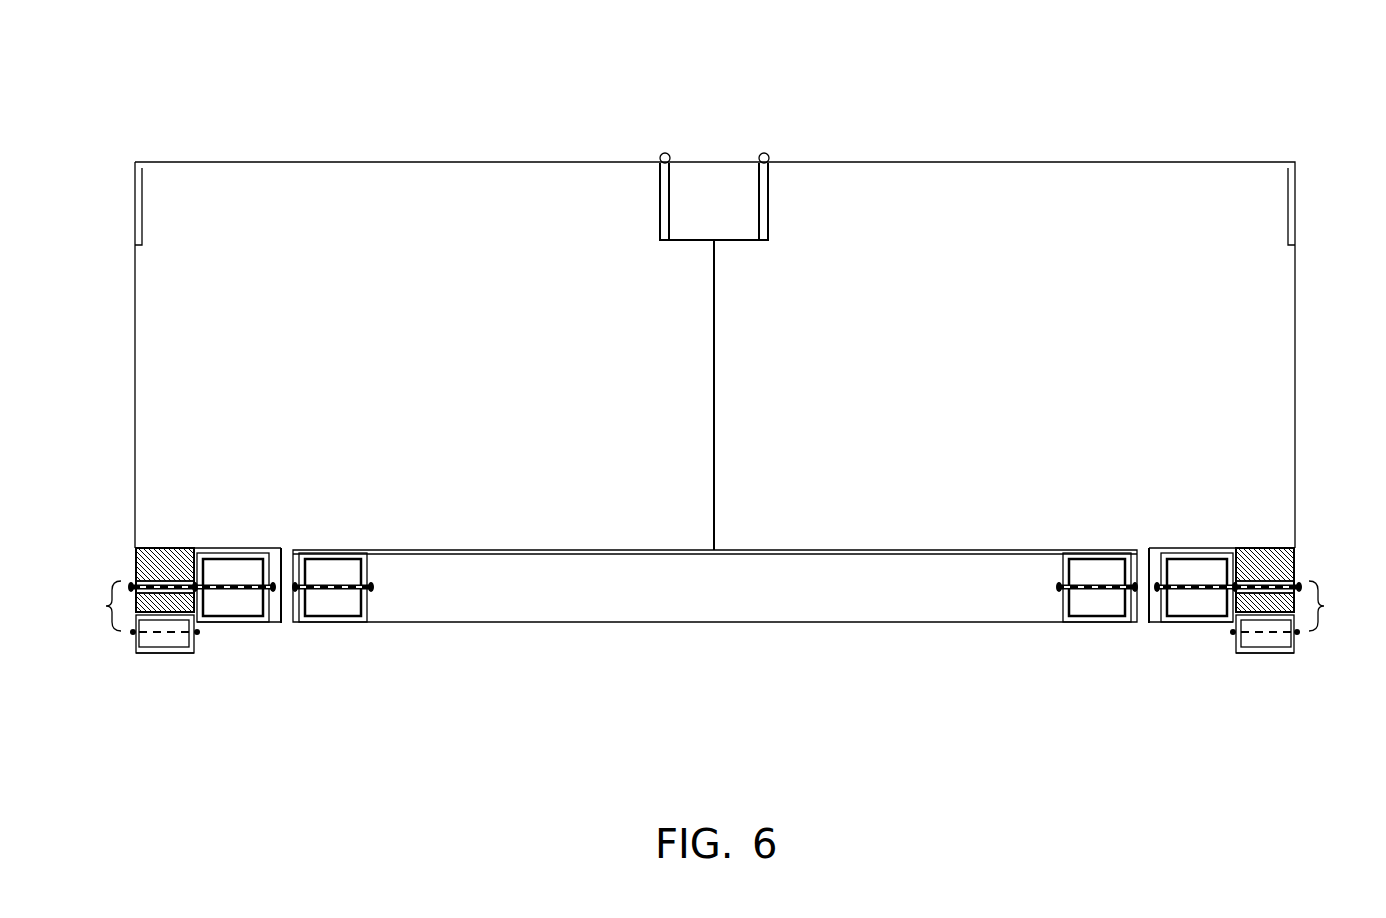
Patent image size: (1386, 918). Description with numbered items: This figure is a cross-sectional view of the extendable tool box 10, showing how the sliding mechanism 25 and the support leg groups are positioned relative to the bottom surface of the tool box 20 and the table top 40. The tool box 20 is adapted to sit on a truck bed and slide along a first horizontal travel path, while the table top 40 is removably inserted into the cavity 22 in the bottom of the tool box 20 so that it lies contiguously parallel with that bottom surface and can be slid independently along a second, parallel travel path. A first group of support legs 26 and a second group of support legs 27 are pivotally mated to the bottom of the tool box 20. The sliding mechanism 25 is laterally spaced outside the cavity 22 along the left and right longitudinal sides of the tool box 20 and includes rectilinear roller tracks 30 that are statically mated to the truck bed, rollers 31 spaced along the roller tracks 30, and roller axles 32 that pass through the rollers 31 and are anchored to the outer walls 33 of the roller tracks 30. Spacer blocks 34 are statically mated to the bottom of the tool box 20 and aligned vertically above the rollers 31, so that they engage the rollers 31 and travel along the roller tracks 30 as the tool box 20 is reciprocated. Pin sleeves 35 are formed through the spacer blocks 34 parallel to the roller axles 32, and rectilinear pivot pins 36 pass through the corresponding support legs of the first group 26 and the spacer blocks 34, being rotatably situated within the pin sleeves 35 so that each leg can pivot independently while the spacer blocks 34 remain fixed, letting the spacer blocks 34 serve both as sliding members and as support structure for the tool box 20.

The extendable tool box 10 is at (955, 88).
The tool box 20 is at (1055, 336).
The cavity 22 is at (298, 627).
The sliding mechanism 25 is at (108, 628).
The first group of support legs 26 is at (233, 551).
The second group of support legs 27 is at (323, 551).
The roller tracks 30 is at (140, 656).
The rollers 31 is at (172, 553).
The roller axles 32 is at (192, 640).
The outer walls 33 is at (197, 636).
The spacer blocks 34 is at (170, 553).
The pin sleeves 35 is at (164, 578).
The pivot pins 36 is at (137, 568).
The table top 40 is at (733, 590).